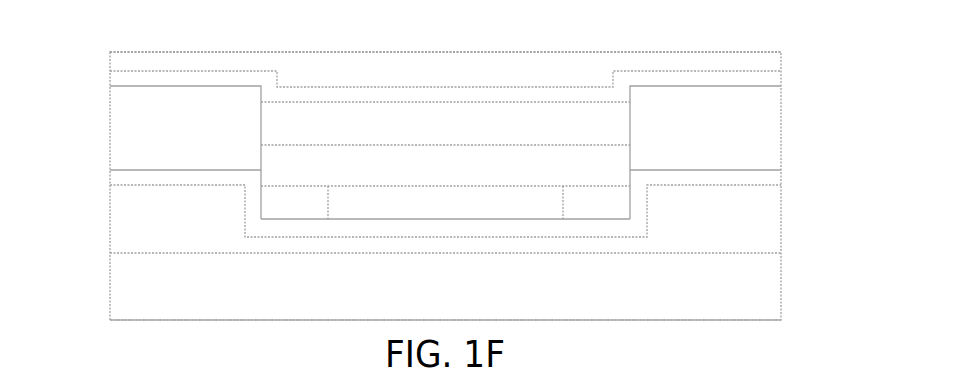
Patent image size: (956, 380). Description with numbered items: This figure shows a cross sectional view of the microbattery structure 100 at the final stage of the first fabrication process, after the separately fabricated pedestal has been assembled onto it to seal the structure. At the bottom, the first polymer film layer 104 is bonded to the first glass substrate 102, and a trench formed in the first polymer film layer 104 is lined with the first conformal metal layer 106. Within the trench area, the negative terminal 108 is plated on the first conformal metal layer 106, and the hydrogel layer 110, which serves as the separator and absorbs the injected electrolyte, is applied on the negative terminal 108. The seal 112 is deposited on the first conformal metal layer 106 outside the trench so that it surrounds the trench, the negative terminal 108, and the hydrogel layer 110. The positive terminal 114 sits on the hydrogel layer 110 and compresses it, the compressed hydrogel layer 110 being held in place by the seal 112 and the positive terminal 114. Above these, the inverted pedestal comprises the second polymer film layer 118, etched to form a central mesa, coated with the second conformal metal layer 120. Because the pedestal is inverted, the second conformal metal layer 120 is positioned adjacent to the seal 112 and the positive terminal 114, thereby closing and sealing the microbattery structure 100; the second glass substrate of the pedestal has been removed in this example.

The microbattery structure 100 is at (94, 43).
The first glass substrate 102 is at (429, 297).
The first polymer film layer 104 is at (164, 229).
The first conformal metal layer 106 is at (772, 175).
The negative terminal 108 is at (429, 212).
The hydrogel layer 110 is at (429, 175).
The seal 112 is at (169, 139).
The positive terminal 114 is at (429, 132).
The second polymer film layer 118 is at (429, 82).
The second conformal metal layer 120 is at (773, 78).